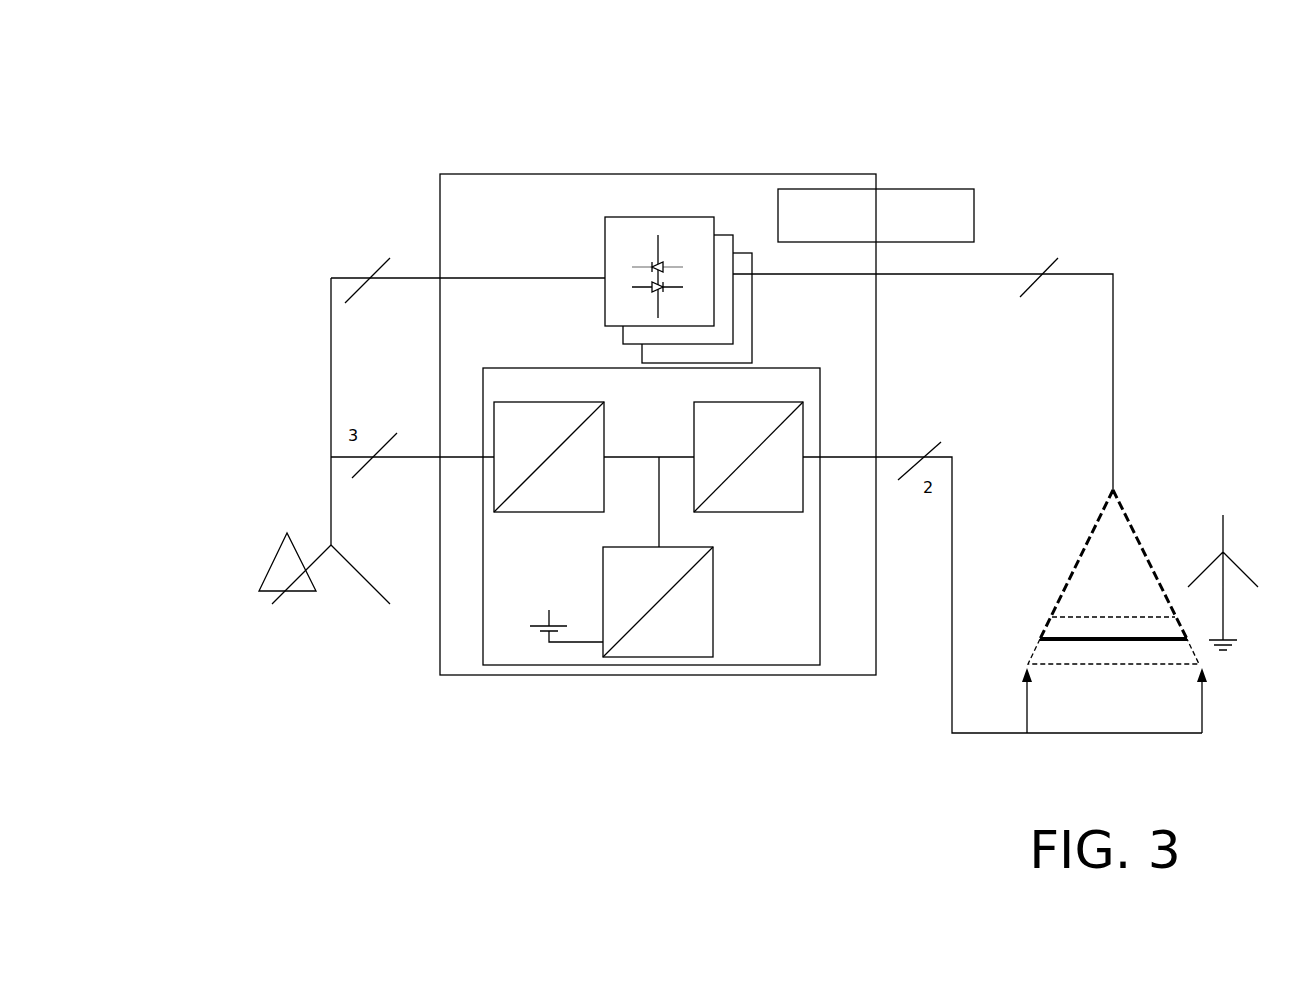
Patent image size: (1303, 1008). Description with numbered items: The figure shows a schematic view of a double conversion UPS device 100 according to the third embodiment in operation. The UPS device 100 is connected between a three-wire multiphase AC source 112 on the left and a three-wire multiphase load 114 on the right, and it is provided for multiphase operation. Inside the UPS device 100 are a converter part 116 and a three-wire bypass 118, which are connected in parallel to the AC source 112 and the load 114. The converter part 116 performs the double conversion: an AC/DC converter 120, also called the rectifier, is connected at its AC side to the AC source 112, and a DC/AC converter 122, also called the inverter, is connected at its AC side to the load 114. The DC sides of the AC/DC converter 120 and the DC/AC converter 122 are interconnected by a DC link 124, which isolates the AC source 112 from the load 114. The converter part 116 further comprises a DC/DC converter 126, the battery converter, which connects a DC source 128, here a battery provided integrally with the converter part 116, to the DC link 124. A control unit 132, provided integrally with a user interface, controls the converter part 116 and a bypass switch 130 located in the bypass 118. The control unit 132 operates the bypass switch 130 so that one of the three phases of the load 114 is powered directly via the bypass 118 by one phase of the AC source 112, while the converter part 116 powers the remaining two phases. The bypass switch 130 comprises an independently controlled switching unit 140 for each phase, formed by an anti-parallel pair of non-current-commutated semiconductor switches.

The double conversion UPS device 100 is at (483, 172).
The AC source 112 is at (331, 553).
The load 114 is at (1113, 619).
The converter part 116 is at (513, 368).
The bypass 118 is at (580, 278).
The AC/DC converter 120 is at (512, 512).
The DC/AC converter 122 is at (766, 512).
The DC link 124 is at (635, 457).
The DC/DC converter 126 is at (680, 657).
The DC source 128 is at (549, 642).
The bypass switch 130 is at (723, 186).
The control unit 132 is at (940, 189).
The switching unit 140 is at (658, 217).